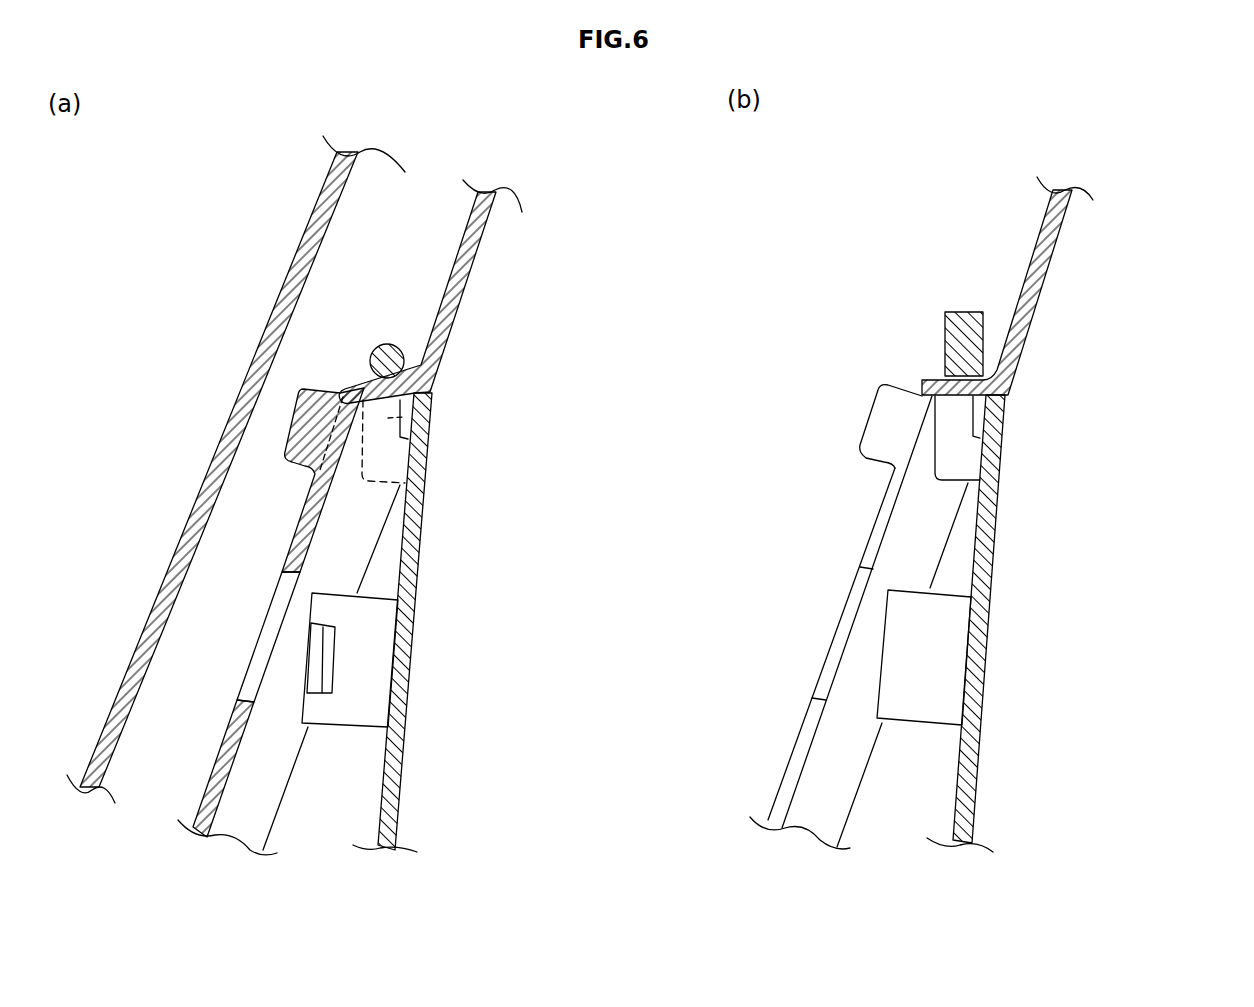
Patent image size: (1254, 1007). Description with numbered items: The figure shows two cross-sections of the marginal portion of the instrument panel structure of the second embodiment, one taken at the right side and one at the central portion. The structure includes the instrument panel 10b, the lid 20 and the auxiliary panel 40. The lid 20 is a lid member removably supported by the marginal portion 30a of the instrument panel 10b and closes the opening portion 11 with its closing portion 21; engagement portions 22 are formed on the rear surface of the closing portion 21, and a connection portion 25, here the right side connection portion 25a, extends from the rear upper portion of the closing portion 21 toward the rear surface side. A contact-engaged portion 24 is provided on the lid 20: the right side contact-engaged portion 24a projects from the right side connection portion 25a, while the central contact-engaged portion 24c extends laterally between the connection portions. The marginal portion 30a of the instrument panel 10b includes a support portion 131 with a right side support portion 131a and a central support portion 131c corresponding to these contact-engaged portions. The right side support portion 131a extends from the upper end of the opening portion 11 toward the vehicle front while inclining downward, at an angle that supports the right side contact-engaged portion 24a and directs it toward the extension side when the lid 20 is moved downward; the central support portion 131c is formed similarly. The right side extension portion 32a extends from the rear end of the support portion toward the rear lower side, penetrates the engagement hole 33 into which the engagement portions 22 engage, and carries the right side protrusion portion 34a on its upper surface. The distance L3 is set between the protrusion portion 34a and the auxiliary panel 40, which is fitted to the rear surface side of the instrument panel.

The instrument panel 10b is at (470, 280).
The contact-engaged portion 24 is at (775, 336).
The right side contact-engaged portion 24a is at (400, 350).
The central contact-engaged portion 24c is at (983, 333).
The support portion 131 is at (787, 413).
The right side support portion 131a is at (420, 366).
The central support portion 131c is at (1003, 343).
The connection portion 25 is at (433, 422).
The right side connection portion 25a is at (957, 480).
The lid 20 is at (457, 478).
The opening portion 11 is at (339, 544).
The closing portion 21 is at (410, 673).
The engagement portion 22 is at (337, 730).
The auxiliary panel 40 is at (296, 266).
The marginal portion 30a is at (333, 376).
The right side protrusion portion 34a is at (290, 467).
The right side extension portion 32a is at (303, 512).
The engagement hole 33 is at (253, 660).
The distance L3 is at (296, 421).